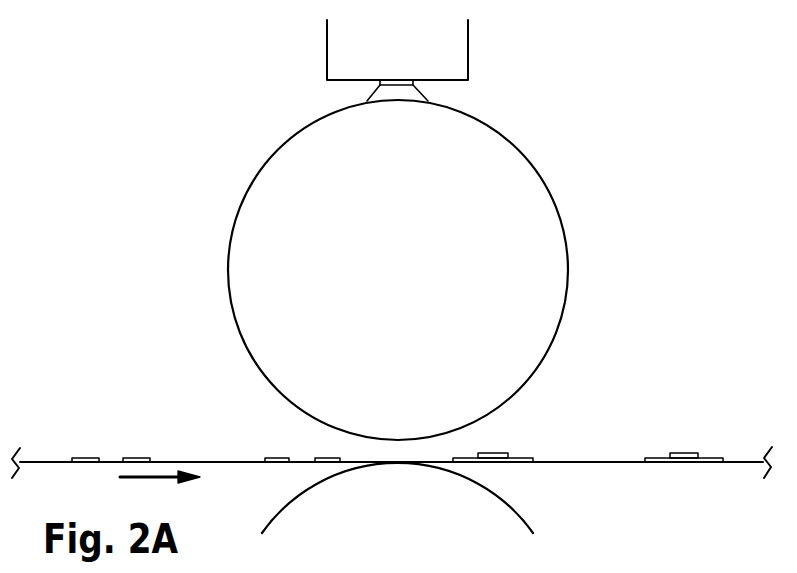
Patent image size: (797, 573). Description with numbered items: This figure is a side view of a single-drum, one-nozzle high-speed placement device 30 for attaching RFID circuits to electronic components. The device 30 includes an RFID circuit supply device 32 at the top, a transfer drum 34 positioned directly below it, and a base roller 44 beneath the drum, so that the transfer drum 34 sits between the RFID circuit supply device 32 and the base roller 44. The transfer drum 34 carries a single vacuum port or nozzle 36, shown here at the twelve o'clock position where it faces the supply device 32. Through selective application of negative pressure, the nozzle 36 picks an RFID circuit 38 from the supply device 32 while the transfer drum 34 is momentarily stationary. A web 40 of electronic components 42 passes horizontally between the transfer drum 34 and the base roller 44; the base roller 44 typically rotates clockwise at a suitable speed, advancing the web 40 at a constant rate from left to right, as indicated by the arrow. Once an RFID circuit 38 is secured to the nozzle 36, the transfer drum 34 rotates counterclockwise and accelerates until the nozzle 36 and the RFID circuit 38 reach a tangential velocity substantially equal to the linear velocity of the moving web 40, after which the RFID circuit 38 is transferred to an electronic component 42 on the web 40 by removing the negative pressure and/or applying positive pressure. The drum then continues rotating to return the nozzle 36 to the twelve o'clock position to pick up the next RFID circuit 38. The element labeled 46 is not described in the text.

The high-speed placement device 30 is at (124, 145).
The RFID circuit supply device 32 is at (409, 53).
The transfer drum 34 is at (411, 270).
The nozzle 36 is at (425, 96).
The RFID circuit 38 is at (378, 84).
The web 40 is at (106, 463).
The electronic component 42 is at (133, 457).
The base roller 44 is at (495, 511).
The layered structure 46 is at (676, 414).